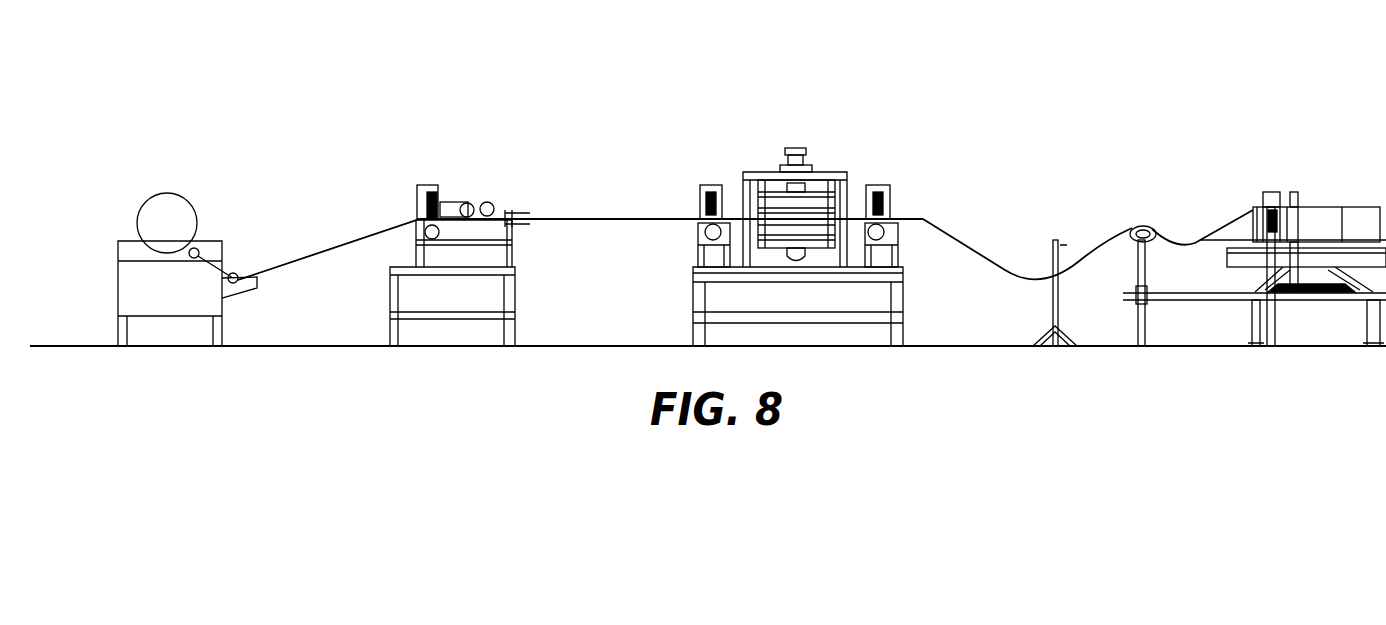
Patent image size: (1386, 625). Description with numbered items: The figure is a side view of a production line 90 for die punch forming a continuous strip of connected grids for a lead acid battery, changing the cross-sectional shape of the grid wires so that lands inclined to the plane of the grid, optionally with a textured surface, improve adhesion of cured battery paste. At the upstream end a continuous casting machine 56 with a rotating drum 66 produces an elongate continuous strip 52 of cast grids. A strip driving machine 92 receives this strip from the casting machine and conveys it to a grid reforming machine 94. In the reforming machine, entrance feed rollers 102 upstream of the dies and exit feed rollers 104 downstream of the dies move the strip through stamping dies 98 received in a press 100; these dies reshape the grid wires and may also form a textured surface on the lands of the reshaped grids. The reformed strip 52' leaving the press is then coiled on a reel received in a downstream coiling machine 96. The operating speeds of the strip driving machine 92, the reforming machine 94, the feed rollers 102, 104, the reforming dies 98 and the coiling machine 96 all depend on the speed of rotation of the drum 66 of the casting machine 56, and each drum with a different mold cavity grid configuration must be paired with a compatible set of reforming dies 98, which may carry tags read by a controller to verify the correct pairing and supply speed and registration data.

The production line 90 is at (260, 102).
The continuous casting machine 56 is at (148, 165).
The drum 66 is at (145, 210).
The continuous strip 52 is at (580, 219).
The reformed strip 52' is at (1088, 265).
The strip driving machine 92 is at (465, 172).
The grid reforming machine 94 is at (797, 132).
The press 100 is at (1036, 210).
The entrance feed rollers 102 is at (711, 172).
The exit feed rollers 104 is at (883, 173).
The stamping dies 98 is at (818, 200).
The coiling machine 96 is at (1290, 160).